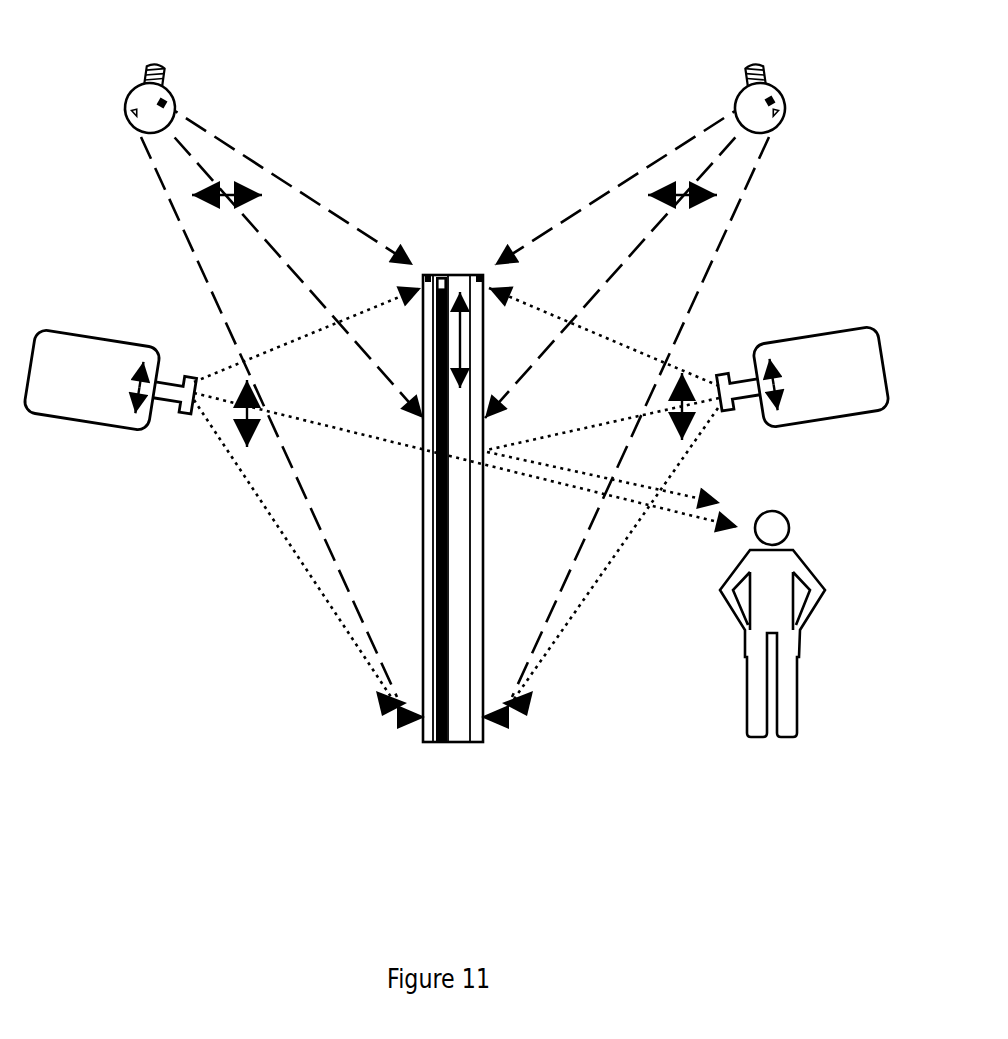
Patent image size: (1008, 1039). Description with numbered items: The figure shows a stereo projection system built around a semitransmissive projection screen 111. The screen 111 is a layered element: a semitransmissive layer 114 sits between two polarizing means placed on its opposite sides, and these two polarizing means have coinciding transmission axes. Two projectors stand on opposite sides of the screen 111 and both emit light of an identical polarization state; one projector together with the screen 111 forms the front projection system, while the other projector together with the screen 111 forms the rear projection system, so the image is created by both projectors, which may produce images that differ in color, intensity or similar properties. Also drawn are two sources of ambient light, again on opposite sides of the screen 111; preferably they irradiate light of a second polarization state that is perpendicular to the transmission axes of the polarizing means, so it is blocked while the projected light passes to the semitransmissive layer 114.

The projection screen 111 is at (446, 728).
The semitransmissive layer 114 is at (445, 277).